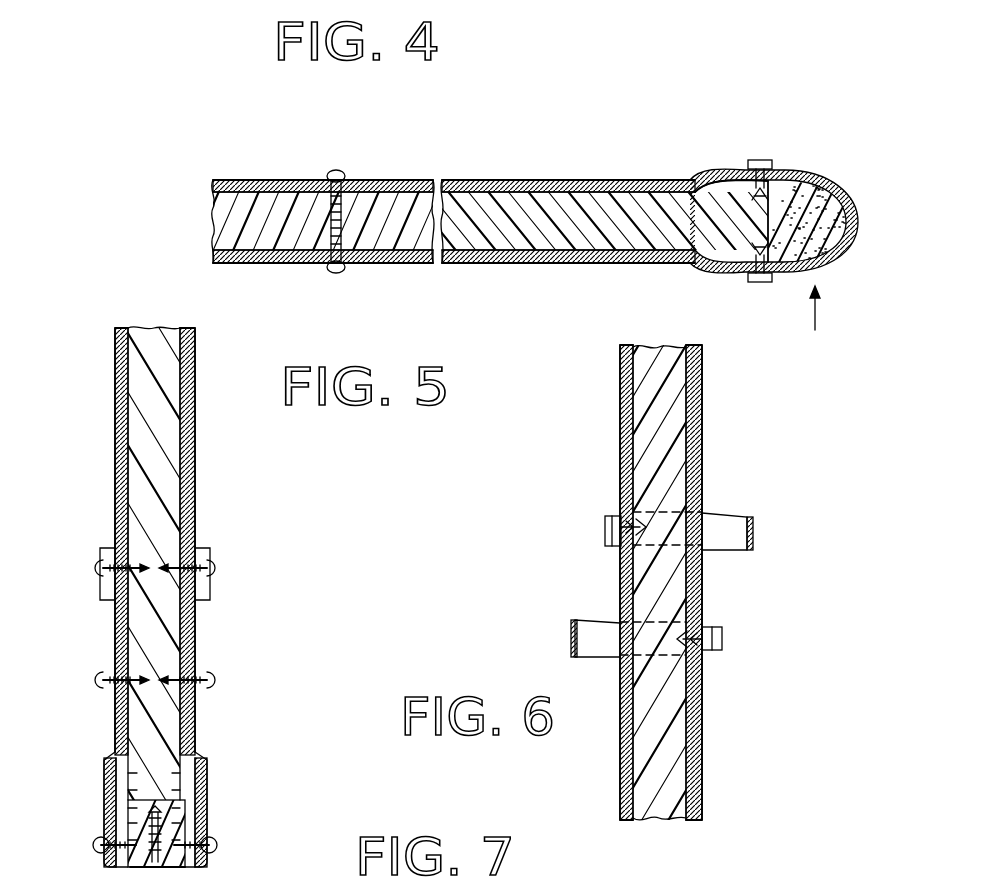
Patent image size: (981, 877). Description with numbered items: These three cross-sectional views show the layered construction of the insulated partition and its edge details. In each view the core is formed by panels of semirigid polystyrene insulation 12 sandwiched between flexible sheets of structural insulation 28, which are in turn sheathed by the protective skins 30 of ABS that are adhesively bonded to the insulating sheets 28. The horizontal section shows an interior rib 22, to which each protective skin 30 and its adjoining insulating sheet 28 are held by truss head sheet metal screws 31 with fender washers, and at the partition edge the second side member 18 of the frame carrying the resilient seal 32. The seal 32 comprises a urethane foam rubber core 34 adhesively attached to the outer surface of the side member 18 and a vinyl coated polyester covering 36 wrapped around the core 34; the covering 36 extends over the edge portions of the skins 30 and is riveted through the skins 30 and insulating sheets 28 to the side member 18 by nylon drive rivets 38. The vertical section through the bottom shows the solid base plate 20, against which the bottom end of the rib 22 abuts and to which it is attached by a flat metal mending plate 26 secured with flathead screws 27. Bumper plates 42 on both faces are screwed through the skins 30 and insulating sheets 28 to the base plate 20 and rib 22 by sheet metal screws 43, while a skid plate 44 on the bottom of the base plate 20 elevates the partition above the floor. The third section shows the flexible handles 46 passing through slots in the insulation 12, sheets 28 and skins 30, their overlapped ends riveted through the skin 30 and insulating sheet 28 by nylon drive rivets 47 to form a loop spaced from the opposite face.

In FIG. 4, the semirigid polystyrene insulation 12 is at (510, 200).
In FIG. 6, the semirigid polystyrene insulation 12 is at (643, 378).
In FIG. 4, the second side member 18 is at (703, 183).
In FIG. 5, the base plate 20 is at (186, 856).
In FIG. 4, the interior ribs 22 is at (369, 258).
In FIG. 5, the interior ribs 22 is at (142, 379).
In FIG. 5, the mending plate 26 is at (200, 778).
In FIG. 5, the flathead screws 27 is at (186, 808).
In FIG. 4, the sheets of structural insulation 28 is at (560, 183).
In FIG. 5, the sheets of structural insulation 28 is at (118, 433).
In FIG. 6, the sheets of structural insulation 28 is at (692, 383).
In FIG. 4, the protective skin 30 is at (616, 180).
In FIG. 5, the protective skin 30 is at (113, 468).
In FIG. 6, the protective skin 30 is at (703, 410).
In FIG. 4, the truss head sheet metal screws 31 is at (334, 175).
In FIG. 4, the resilient seal 32 is at (819, 323).
In FIG. 4, the resilient core 34 is at (798, 194).
In FIG. 4, the seal covering 36 is at (857, 232).
In FIG. 4, the nylon drive rivets 38 is at (757, 162).
In FIG. 5, the bumper plates 42 is at (108, 596).
In FIG. 5, the sheet metal screws 43 is at (214, 564).
In FIG. 5, the skid plate 44 is at (150, 860).
In FIG. 6, the handles 46 is at (622, 515).
In FIG. 6, the nylon drive rivets 47 is at (604, 532).